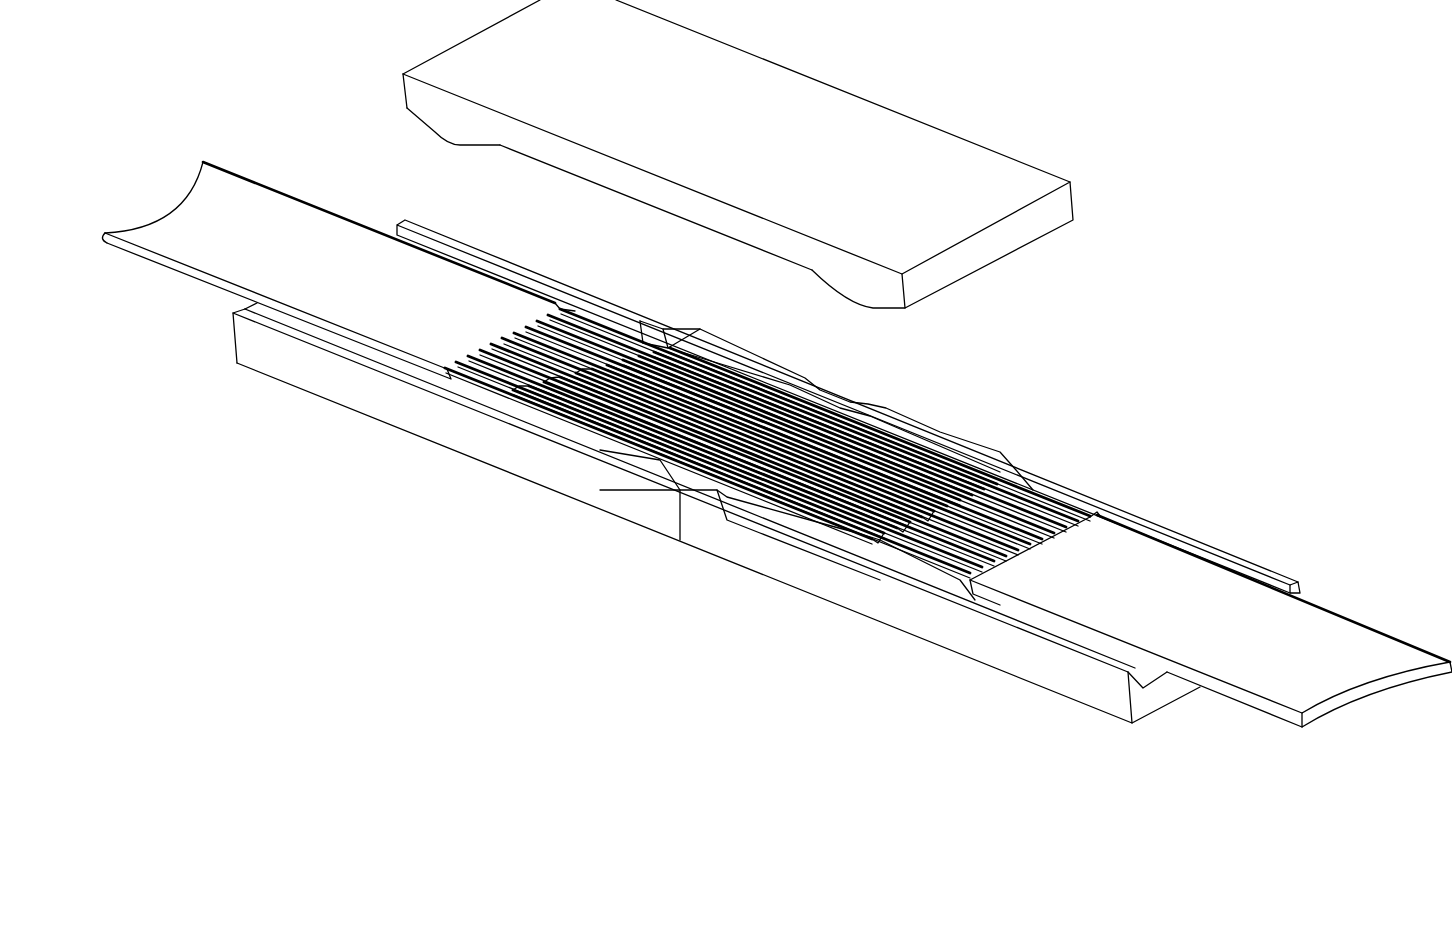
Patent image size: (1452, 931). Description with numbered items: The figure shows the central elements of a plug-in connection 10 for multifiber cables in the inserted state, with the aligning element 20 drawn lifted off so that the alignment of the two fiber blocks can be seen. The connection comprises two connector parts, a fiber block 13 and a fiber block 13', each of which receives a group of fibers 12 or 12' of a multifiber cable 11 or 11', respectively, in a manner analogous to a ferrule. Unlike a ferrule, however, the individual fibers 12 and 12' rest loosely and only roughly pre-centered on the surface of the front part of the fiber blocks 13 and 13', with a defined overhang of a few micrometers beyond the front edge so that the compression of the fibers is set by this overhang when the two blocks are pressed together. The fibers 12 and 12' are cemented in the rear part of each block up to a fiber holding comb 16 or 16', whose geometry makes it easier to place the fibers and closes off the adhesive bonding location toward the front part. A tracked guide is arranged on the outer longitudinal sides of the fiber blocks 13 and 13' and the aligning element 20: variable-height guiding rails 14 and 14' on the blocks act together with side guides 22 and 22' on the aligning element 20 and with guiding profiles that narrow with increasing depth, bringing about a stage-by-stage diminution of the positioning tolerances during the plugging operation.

The plug-in connection 10 is at (1238, 250).
The multifiber cable 11 is at (1211, 647).
The multifiber cable 11' is at (338, 240).
The fibers 12 is at (801, 499).
The fibers 12' is at (721, 445).
The fiber block 13 is at (716, 560).
The fiber block 13' is at (766, 406).
The guiding rail 14 is at (842, 498).
The guiding rail 14' is at (810, 372).
The fiber holding comb 16 is at (864, 615).
The fiber holding comb 16' is at (467, 451).
The aligning element 20 is at (691, 200).
The side guide 22 is at (891, 335).
The side guide 22' is at (405, 141).